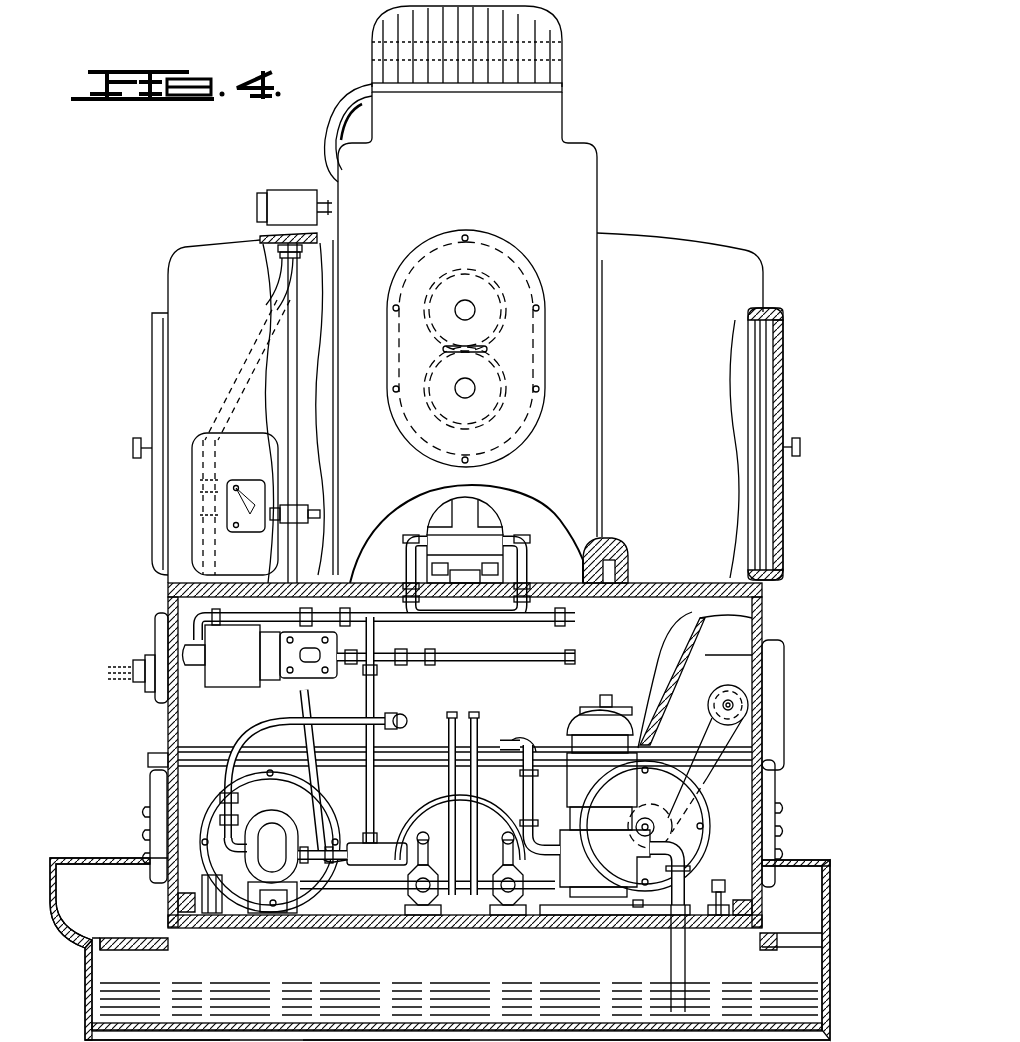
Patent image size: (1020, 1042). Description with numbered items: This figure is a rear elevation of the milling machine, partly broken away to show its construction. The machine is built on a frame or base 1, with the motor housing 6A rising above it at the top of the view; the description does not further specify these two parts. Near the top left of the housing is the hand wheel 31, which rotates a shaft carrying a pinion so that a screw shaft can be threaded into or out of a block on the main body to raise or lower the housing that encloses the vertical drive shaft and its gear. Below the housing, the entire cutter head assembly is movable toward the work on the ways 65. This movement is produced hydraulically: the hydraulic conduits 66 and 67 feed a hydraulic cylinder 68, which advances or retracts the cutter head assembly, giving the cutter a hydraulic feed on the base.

The frame 1 is at (166, 592).
The motor housing 6A is at (586, 190).
The hand wheel 31 is at (324, 142).
The ways 65 is at (631, 556).
The hydraulic conduit 66 is at (404, 578).
The hydraulic conduit 67 is at (532, 562).
The hydraulic cylinder 68 is at (488, 516).